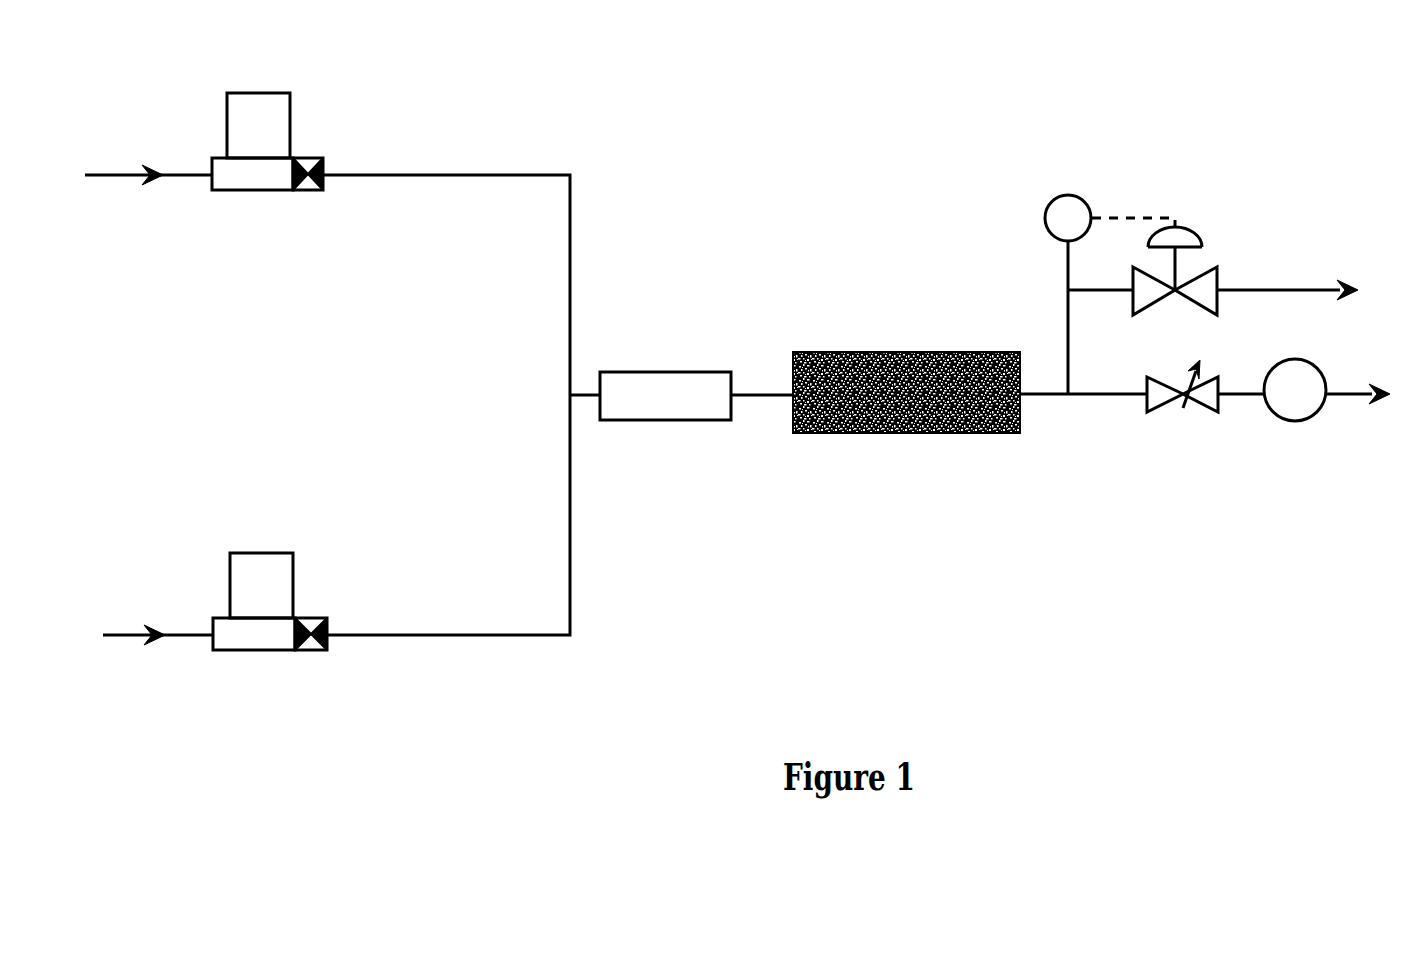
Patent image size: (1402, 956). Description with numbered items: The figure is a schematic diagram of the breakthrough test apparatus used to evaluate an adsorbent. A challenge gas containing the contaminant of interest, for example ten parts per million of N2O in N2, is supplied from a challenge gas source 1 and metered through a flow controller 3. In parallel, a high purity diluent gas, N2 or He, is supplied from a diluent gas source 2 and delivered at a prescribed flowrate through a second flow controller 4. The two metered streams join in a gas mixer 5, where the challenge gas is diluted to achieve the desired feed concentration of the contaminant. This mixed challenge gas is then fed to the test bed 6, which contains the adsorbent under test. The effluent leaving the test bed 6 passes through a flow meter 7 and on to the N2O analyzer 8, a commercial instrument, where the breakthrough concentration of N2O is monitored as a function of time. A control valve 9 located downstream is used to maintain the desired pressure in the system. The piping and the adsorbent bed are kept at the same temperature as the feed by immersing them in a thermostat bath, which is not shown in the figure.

The challenge gas source 1 is at (70, 637).
The diluent gas source 2 is at (52, 193).
The flow controller 3 is at (263, 652).
The flow controller 4 is at (283, 192).
The gas mixer 5 is at (680, 419).
The test bed 6 is at (920, 430).
The flow meter 7 is at (1197, 410).
The N2O analyzer 8 is at (1298, 423).
The control valve 9 is at (1132, 212).